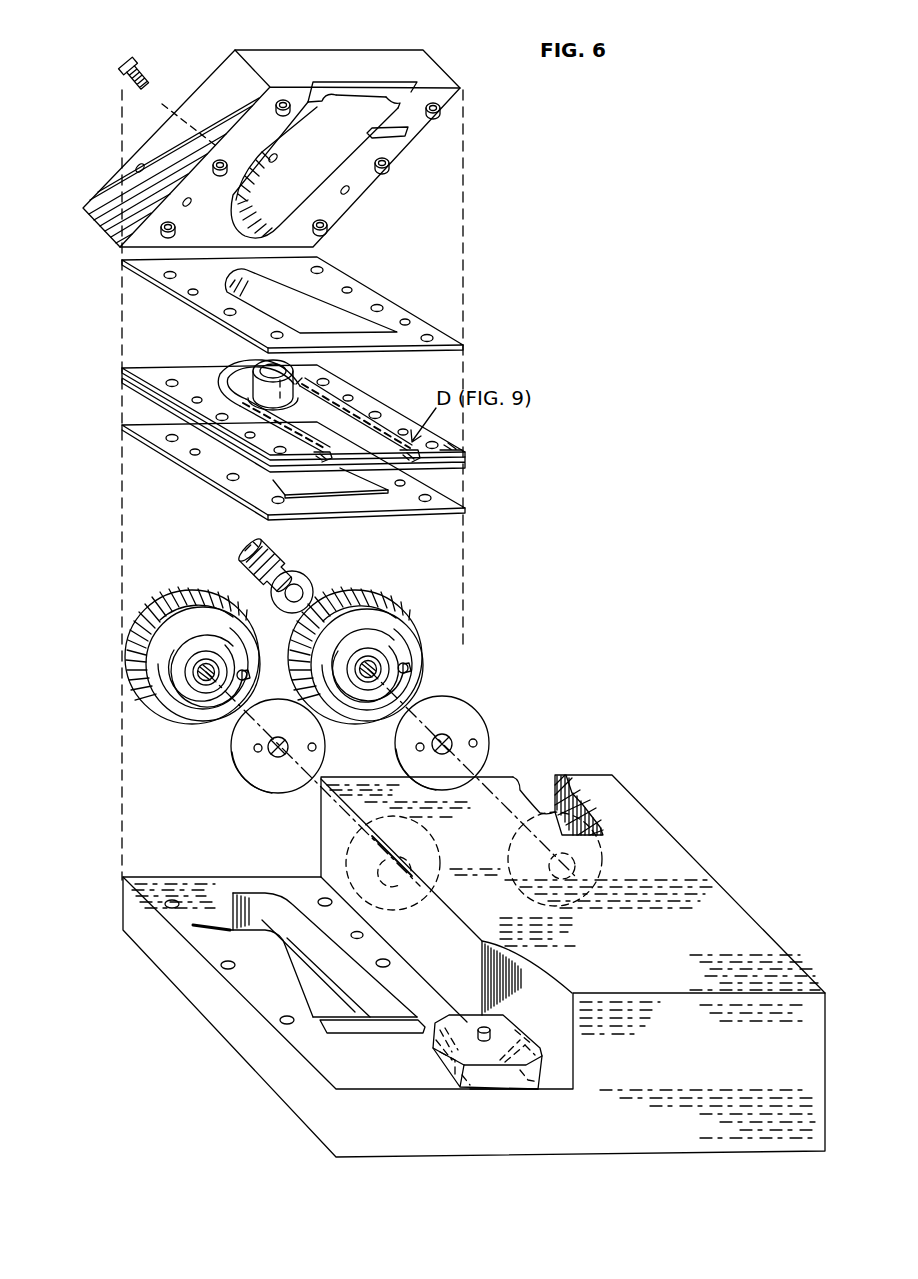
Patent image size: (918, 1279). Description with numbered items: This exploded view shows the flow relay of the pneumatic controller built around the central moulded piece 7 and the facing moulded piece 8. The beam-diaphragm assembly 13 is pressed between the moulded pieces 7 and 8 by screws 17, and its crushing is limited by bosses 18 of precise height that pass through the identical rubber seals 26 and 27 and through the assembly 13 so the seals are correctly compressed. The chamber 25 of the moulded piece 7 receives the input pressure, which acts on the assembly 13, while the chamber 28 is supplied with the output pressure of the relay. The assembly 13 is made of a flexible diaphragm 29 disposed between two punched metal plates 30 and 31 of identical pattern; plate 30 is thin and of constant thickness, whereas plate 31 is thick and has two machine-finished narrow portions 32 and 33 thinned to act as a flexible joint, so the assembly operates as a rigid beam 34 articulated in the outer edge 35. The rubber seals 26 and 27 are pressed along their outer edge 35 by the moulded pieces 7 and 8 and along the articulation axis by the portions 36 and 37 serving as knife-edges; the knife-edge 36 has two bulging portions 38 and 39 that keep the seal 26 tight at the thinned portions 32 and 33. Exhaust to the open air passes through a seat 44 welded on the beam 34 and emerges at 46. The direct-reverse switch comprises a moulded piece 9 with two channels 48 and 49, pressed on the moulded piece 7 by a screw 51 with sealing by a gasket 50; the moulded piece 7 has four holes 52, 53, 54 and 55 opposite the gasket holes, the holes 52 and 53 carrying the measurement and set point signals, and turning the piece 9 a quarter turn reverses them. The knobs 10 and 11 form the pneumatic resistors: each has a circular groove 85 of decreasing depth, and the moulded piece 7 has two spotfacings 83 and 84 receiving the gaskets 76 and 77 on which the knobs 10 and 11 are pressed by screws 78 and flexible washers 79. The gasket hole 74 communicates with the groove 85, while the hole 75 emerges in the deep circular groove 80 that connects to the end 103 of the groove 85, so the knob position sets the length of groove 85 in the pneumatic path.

The moulded piece 7 is at (273, 447).
The moulded piece 8 is at (90, 205).
The moulded piece 9 is at (470, 1018).
The knob 10 is at (128, 652).
The knob 11 is at (368, 592).
The beam-diaphragm assembly 13 is at (204, 360).
The screw 17 is at (120, 66).
The boss 18 is at (328, 223).
The chamber 25 is at (290, 963).
The rubber seal 26 is at (122, 262).
The rubber seal 27 is at (122, 427).
The chamber 28 is at (326, 143).
The flexible diaphragm 29 is at (122, 373).
The punched metal plate 30 is at (122, 382).
The punched metal plate 31 is at (160, 368).
The machine-finished narrow portion 32 is at (318, 453).
The machine-finished narrow portion 33 is at (447, 443).
The rigid beam 34 is at (320, 430).
The outer edge 35 is at (340, 386).
The knife-edge portion 36 is at (358, 95).
The knife-edge portion 37 is at (345, 1012).
The bulging portion 38 is at (320, 97).
The bulging portion 39 is at (397, 103).
The exhaust seat 44 is at (296, 372).
The exhaust outlet 46 is at (382, 472).
The channel 48 is at (440, 1012).
The channel 49 is at (522, 1014).
The gasket 50 is at (490, 1092).
The screw 51 is at (482, 1028).
The hole 52 is at (432, 1052).
The hole 53 is at (532, 1082).
The hole 54 is at (460, 1090).
The hole 55 is at (535, 1042).
The gasket hole 74 is at (314, 750).
The gasket hole 75 is at (256, 750).
The gasket 76 is at (262, 775).
The gasket 77 is at (470, 760).
The screw 78 is at (268, 552).
The flexible washer 79 is at (300, 578).
The deep circular groove 80 is at (206, 694).
The spotfacing 83 is at (330, 822).
The spotfacing 84 is at (553, 808).
The circular groove 85 is at (187, 700).
The groove end 103 is at (409, 669).